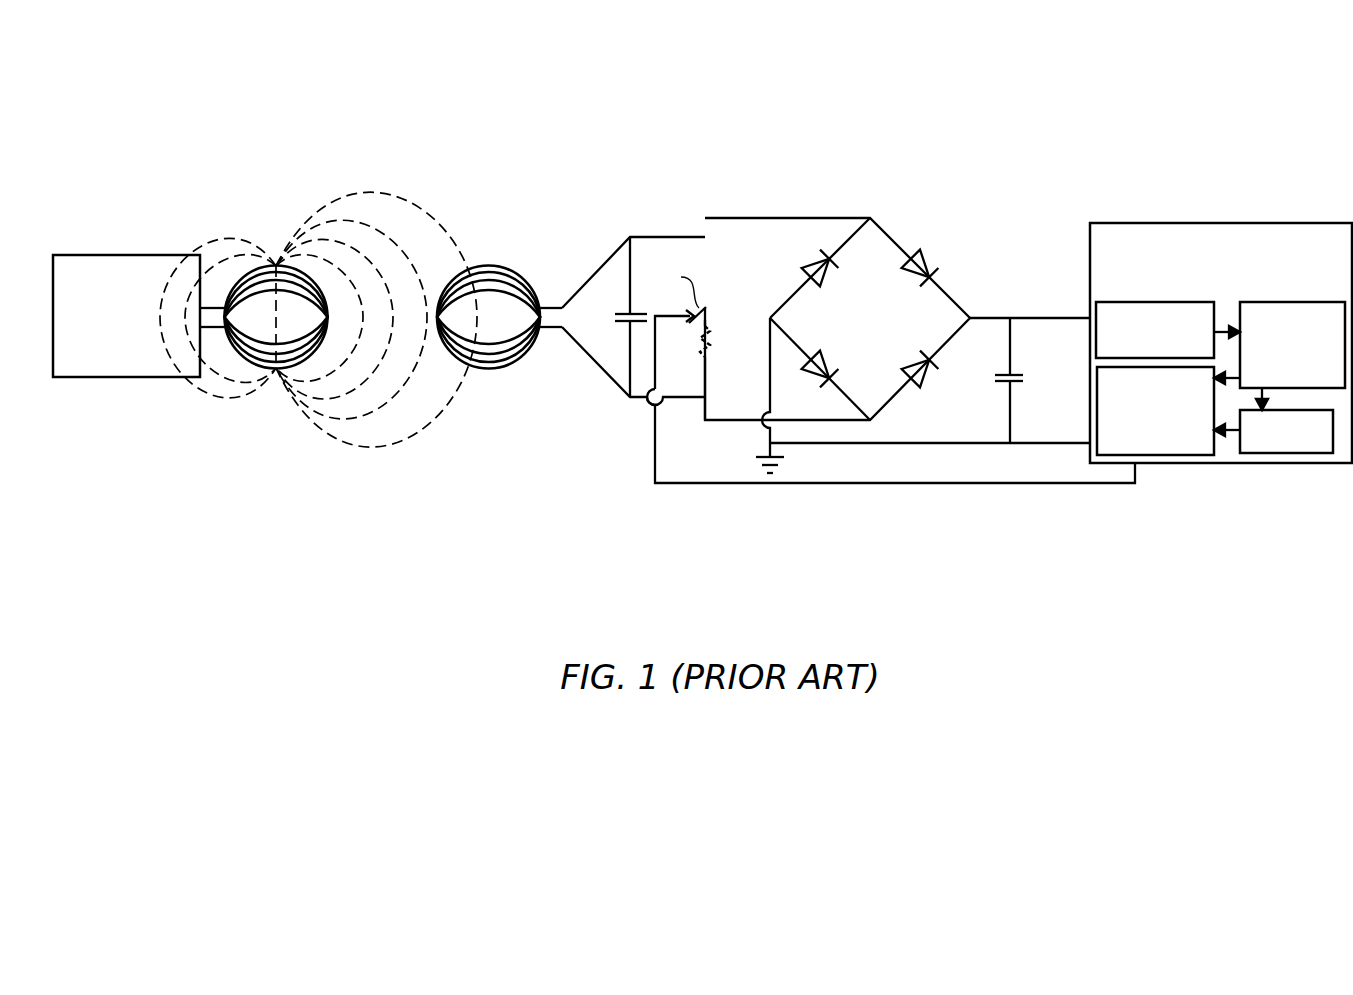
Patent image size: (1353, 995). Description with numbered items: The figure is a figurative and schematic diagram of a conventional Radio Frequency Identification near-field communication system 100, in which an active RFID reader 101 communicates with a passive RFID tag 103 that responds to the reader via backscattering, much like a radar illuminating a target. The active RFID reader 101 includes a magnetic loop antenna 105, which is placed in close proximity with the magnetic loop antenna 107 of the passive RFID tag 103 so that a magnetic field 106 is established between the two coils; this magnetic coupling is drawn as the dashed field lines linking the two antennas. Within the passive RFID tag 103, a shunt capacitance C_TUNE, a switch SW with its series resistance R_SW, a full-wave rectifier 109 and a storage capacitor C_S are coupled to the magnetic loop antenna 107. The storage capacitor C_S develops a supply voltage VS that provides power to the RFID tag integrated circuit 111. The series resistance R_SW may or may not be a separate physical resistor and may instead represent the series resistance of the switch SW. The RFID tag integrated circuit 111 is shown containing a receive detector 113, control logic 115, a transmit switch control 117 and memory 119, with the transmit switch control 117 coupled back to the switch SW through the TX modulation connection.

The RFID near-field communication system 100 is at (732, 36).
The active RFID reader 101 is at (112, 362).
The passive RFID tag 103 is at (598, 188).
The magnetic loop antenna 105 is at (277, 266).
The magnetic field 106 is at (421, 231).
The magnetic loop antenna 107 is at (532, 354).
The full-wave rectifier 109 is at (856, 362).
The RFID tag integrated circuit 111 is at (1206, 274).
The receive detector 113 is at (1133, 302).
The control logic 115 is at (1292, 302).
The transmit switch control 117 is at (1183, 455).
The memory 119 is at (1300, 455).